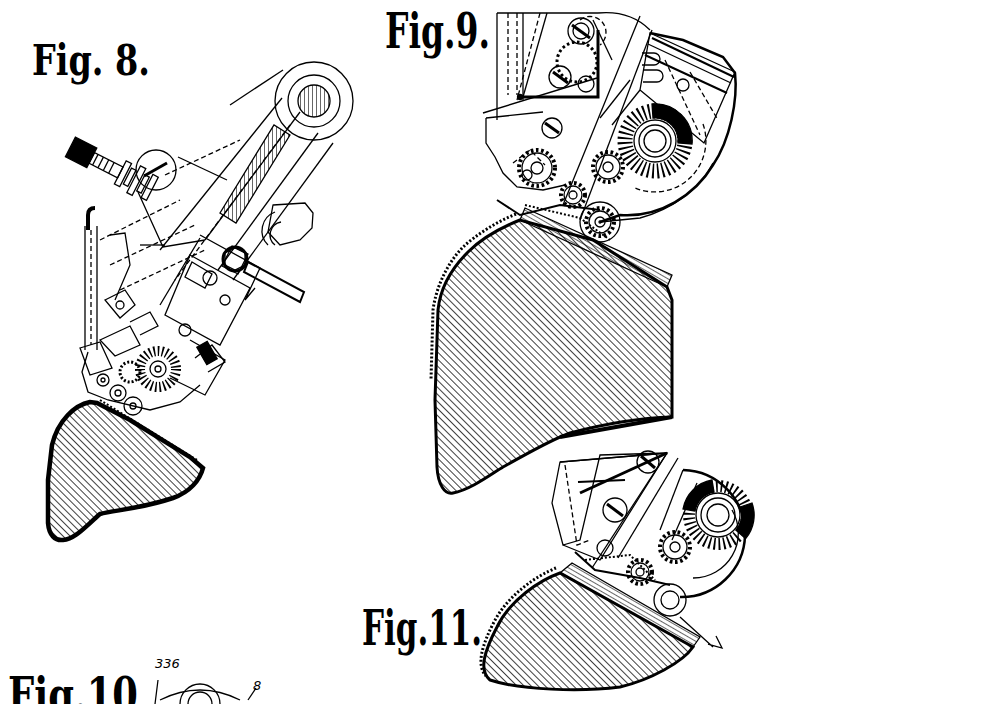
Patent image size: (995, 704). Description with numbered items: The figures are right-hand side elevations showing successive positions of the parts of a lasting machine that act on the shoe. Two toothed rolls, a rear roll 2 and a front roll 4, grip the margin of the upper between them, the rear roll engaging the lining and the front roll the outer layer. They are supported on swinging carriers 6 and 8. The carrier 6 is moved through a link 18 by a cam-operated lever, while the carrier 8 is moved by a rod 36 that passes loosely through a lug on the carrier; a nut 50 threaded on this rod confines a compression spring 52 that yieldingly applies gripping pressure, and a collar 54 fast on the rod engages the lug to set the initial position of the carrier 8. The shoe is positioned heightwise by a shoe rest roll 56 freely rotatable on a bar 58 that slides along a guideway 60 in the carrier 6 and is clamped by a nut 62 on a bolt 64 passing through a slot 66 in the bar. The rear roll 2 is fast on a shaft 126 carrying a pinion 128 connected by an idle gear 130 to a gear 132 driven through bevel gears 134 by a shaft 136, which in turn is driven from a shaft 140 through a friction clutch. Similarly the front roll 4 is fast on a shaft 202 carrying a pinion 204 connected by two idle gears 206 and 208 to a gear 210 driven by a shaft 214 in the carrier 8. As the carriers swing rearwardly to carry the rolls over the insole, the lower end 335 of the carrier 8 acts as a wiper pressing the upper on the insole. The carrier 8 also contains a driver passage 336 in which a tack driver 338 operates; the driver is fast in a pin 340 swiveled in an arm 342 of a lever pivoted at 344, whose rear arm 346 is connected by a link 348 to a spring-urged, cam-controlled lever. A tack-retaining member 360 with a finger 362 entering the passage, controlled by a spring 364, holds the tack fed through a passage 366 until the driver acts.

In FIG. 9, the rear roll 2 is at (573, 213).
In FIG. 11, the rear roll 2 is at (667, 593).
In FIG. 9, the front roll 4 is at (500, 208).
In FIG. 11, the front roll 4 is at (568, 602).
In FIG. 8, the carrier 6 is at (227, 287).
In FIG. 9, the carrier 6 is at (717, 143).
In FIG. 11, the carrier 6 is at (687, 473).
In FIG. 8, the carrier 8 is at (247, 135).
In FIG. 9, the carrier 8 is at (653, 20).
In FIG. 11, the carrier 8 is at (677, 447).
In FIG. 8, the link 18 is at (267, 268).
In FIG. 8, the rod 36 is at (297, 287).
In FIG. 8, the nut 50 is at (100, 148).
In FIG. 8, the compression spring 52 is at (142, 180).
In FIG. 8, the collar 54 is at (205, 291).
In FIG. 8, the roll 56 is at (130, 413).
In FIG. 9, the roll 56 is at (603, 243).
In FIG. 11, the roll 56 is at (705, 637).
In FIG. 8, the bar 58 is at (150, 407).
In FIG. 9, the bar 58 is at (660, 210).
In FIG. 11, the bar 58 is at (737, 580).
In FIG. 8, the guideway 60 is at (223, 317).
In FIG. 8, the nut 62 is at (217, 350).
In FIG. 8, the bolt 64 is at (213, 363).
In FIG. 8, the slot 66 is at (193, 380).
In FIG. 9, the shaft 126 is at (613, 233).
In FIG. 11, the shaft 126 is at (671, 542).
In FIG. 9, the pinion 128 is at (588, 190).
In FIG. 11, the pinion 128 is at (659, 570).
In FIG. 9, the idle gear 130 is at (640, 200).
In FIG. 11, the idle gear 130 is at (697, 555).
In FIG. 9, the gear 132 is at (677, 195).
In FIG. 9, the bevel gears 134 is at (703, 140).
In FIG. 11, the bevel gears 134 is at (740, 520).
In FIG. 9, the shaft 136 is at (727, 62).
In FIG. 8, the shaft 140 is at (341, 100).
In FIG. 9, the shaft 202 is at (522, 177).
In FIG. 11, the shaft 202 is at (609, 540).
In FIG. 9, the pinion 204 is at (500, 150).
In FIG. 9, the idle gear 206 is at (608, 163).
In FIG. 9, the idle gear 208 is at (543, 58).
In FIG. 9, the gear 210 is at (617, 18).
In FIG. 8, the shaft 214 is at (167, 252).
In FIG. 8, the lower end 335 is at (88, 388).
In FIG. 9, the lower end 335 is at (503, 197).
In FIG. 11, the lower end 335 is at (580, 563).
In FIG. 8, the driver passage 336 is at (108, 298).
In FIG. 9, the driver passage 336 is at (523, 77).
In FIG. 8, the tack driver 338 is at (138, 236).
In FIG. 8, the pin 340 is at (157, 150).
In FIG. 8, the arm 342 is at (188, 166).
In FIG. 8, the pivot 344 is at (280, 232).
In FIG. 8, the arm 346 is at (307, 207).
In FIG. 8, the link 348 is at (83, 212).
In FIG. 8, the tack-retaining member 360 is at (82, 358).
In FIG. 9, the tack-retaining member 360 is at (490, 130).
In FIG. 11, the tack-retaining member 360 is at (552, 510).
In FIG. 9, the finger 362 is at (513, 163).
In FIG. 11, the finger 362 is at (577, 545).
In FIG. 8, the spring 364 is at (103, 340).
In FIG. 9, the spring 364 is at (500, 110).
In FIG. 8, the passage 366 is at (100, 280).
In FIG. 9, the passage 366 is at (518, 97).
In FIG. 11, the passage 366 is at (592, 478).